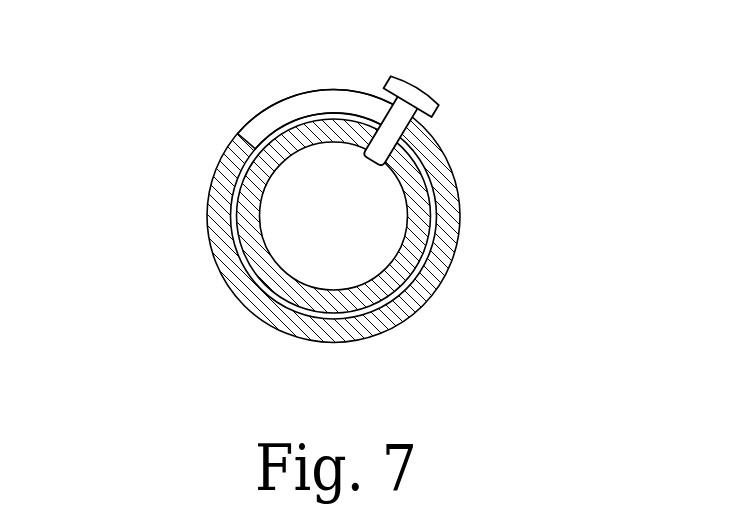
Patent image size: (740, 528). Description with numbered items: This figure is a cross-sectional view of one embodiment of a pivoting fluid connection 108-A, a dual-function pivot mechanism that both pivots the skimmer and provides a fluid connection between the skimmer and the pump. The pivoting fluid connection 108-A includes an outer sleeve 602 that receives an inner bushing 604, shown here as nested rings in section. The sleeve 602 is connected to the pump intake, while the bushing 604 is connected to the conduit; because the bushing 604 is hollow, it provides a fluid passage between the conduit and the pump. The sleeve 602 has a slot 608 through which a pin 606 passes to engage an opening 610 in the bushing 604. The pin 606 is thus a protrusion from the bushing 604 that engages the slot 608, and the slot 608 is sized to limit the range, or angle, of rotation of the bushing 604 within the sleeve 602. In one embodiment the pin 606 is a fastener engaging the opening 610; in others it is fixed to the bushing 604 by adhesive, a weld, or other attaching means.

The pivoting fluid connection 108-A is at (319, 264).
The sleeve 602 is at (446, 271).
The bushing 604 is at (284, 132).
The pin 606 is at (440, 105).
The slot 608 is at (255, 127).
The opening 610 is at (358, 130).